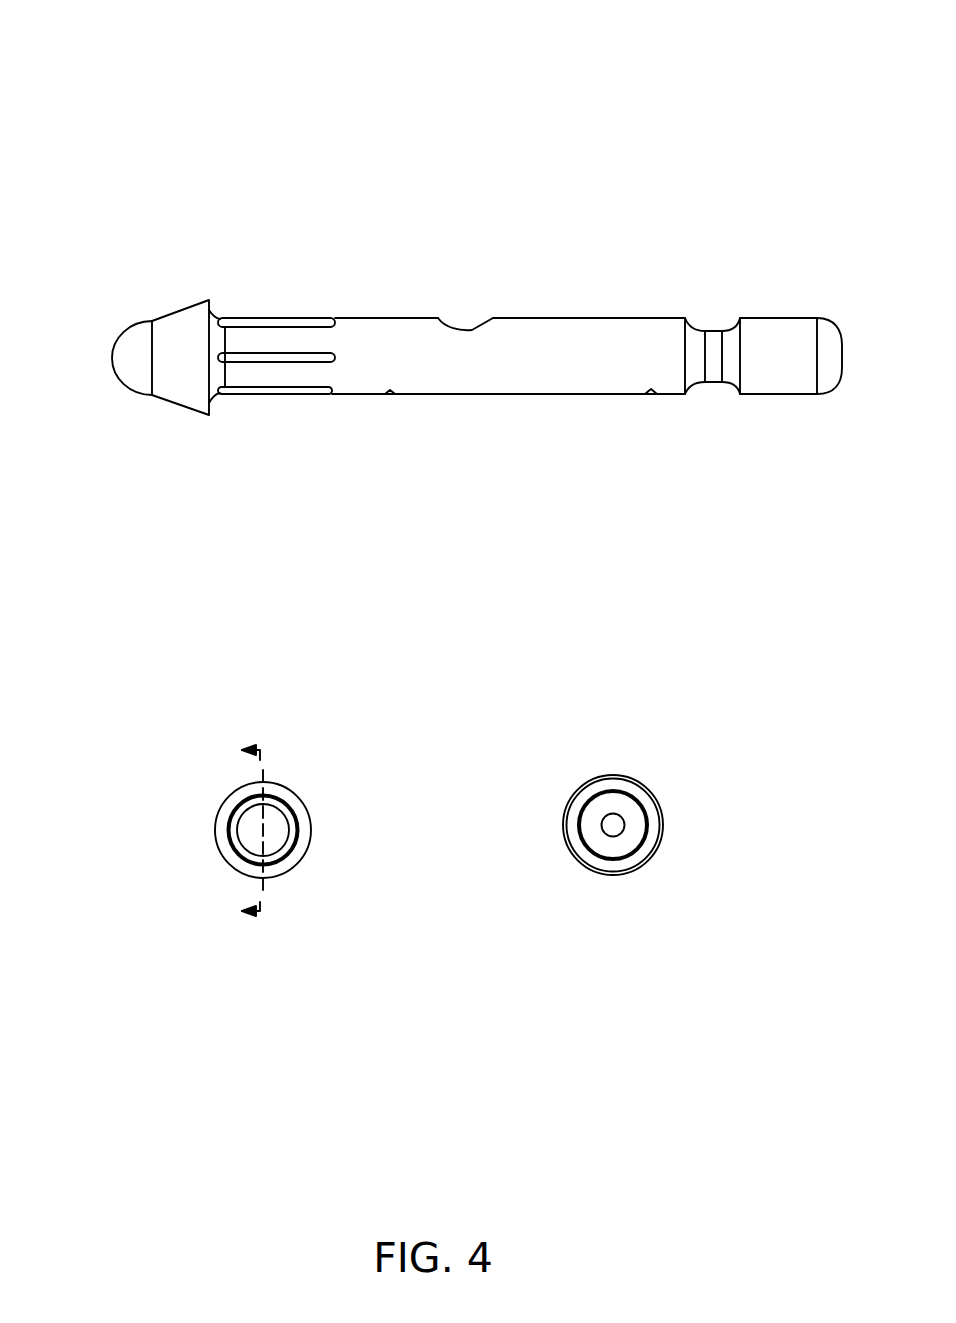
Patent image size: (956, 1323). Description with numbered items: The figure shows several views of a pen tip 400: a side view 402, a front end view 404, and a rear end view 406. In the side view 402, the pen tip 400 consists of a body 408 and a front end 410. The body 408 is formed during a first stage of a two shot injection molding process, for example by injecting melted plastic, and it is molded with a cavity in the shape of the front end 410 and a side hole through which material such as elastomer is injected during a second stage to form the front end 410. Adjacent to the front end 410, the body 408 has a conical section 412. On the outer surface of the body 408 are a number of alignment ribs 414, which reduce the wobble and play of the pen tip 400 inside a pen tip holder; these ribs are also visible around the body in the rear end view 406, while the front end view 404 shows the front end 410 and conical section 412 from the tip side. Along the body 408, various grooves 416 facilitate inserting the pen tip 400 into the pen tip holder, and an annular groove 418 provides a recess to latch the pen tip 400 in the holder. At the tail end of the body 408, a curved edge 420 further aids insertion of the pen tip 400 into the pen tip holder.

The pen tip 400 is at (146, 68).
The side view 402 is at (144, 257).
The front end view 404 is at (147, 769).
The rear end view 406 is at (684, 879).
The body 408 is at (598, 318).
The front end 410 is at (138, 392).
The conical section 412 is at (186, 307).
The alignment ribs 414 is at (274, 394).
The grooves 416 is at (390, 393).
The annular groove 418 is at (722, 382).
The curved edge 420 is at (834, 322).